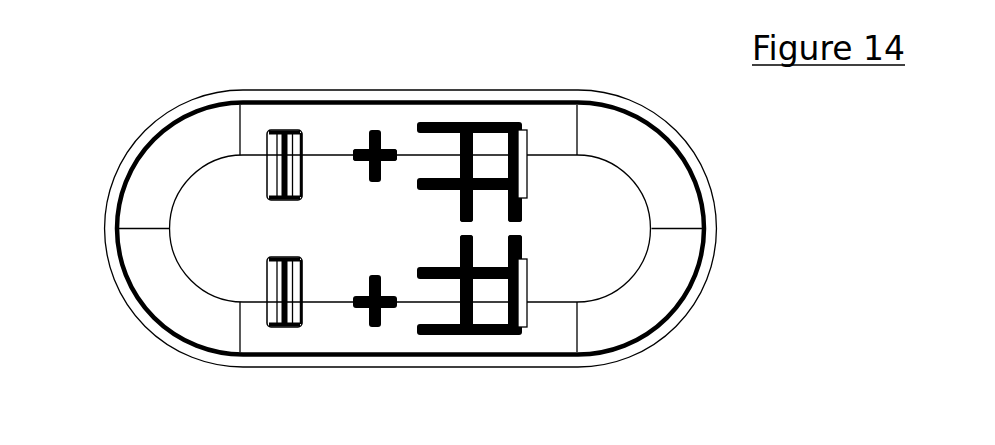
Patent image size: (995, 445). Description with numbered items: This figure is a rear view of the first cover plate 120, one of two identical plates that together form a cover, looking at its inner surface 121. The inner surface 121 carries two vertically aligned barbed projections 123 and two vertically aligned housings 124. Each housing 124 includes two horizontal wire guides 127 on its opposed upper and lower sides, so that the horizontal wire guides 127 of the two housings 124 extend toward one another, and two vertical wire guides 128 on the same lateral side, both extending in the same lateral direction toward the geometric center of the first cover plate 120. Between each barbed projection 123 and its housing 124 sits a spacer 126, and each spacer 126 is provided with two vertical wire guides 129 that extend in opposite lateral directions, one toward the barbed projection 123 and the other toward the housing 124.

The first cover plate 120 is at (116, 79).
The inner surface 121 is at (233, 238).
The barbed projection 123 is at (285, 132).
The housing 124 is at (495, 122).
The spacer 126 is at (355, 152).
The horizontal wire guide 127 is at (472, 220).
The vertical wire guide 128 is at (428, 182).
The vertical wire guide 129 is at (395, 152).